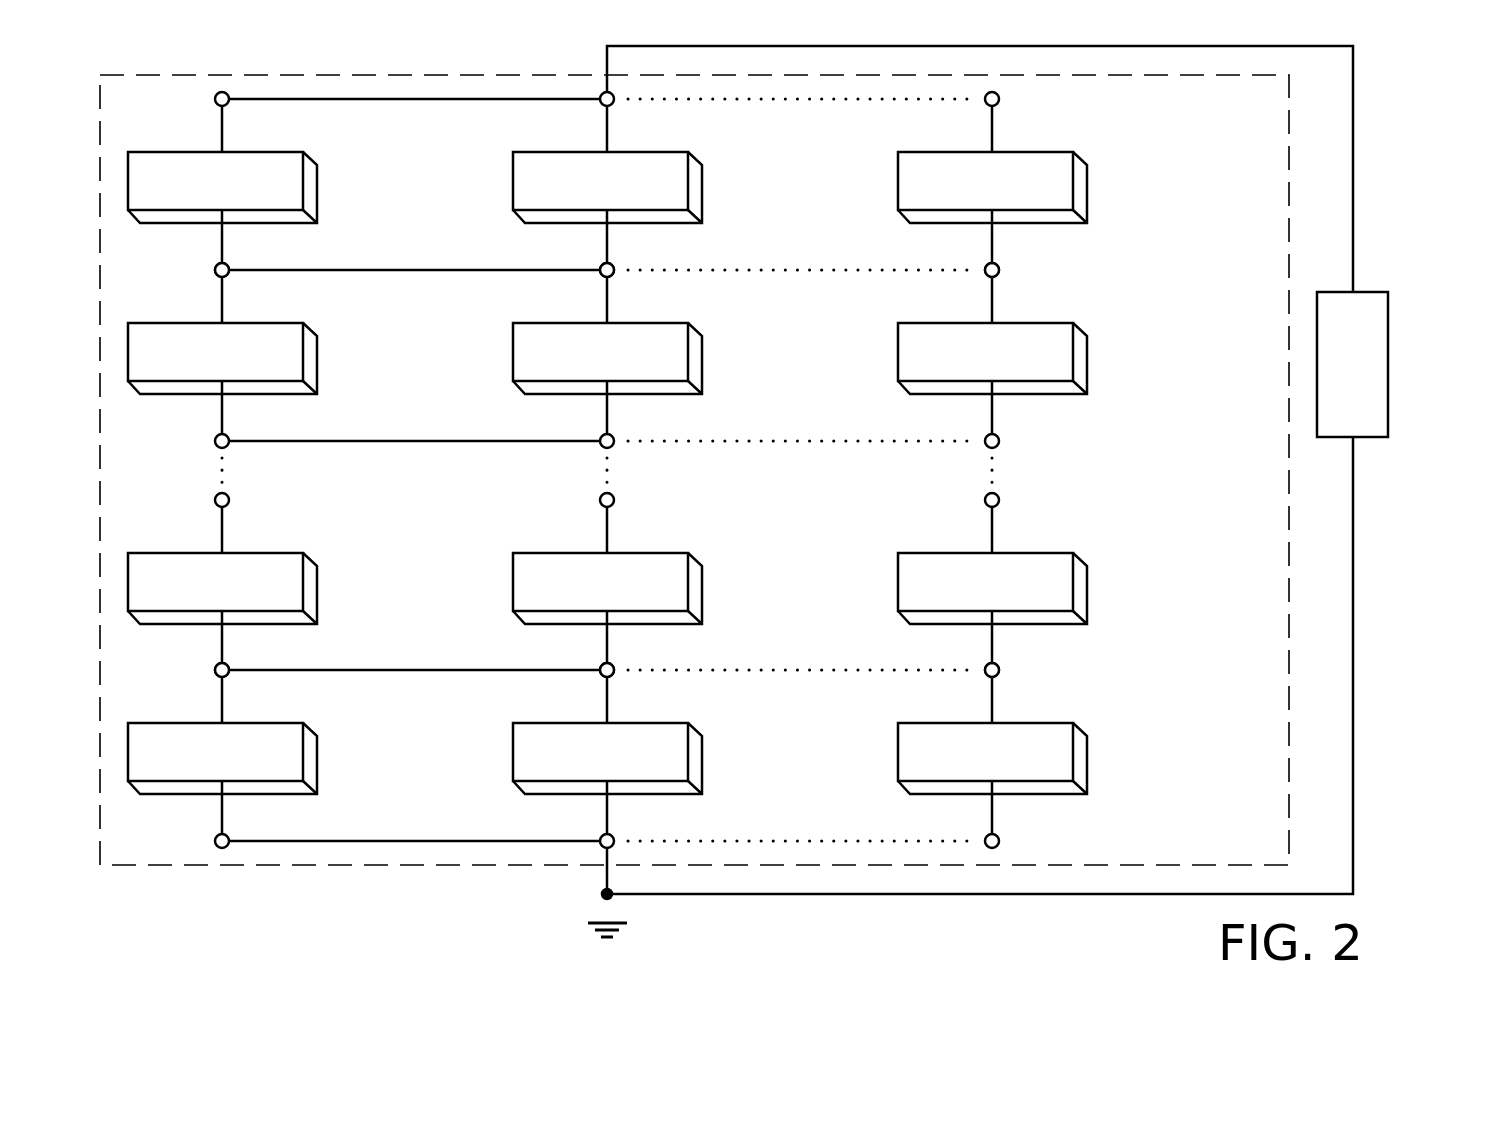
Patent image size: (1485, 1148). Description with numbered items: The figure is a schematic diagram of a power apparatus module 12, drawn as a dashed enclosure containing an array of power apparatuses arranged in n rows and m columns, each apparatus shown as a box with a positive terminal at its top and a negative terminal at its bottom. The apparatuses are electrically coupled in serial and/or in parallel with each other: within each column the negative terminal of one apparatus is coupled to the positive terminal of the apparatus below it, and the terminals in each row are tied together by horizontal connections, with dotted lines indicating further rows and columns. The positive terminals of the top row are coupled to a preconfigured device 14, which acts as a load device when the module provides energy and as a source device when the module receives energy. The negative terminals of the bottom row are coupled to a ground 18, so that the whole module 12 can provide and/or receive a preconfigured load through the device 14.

The power apparatus module 12 is at (386, 867).
The preconfigured device 14 is at (1388, 340).
The ground 18 is at (599, 937).